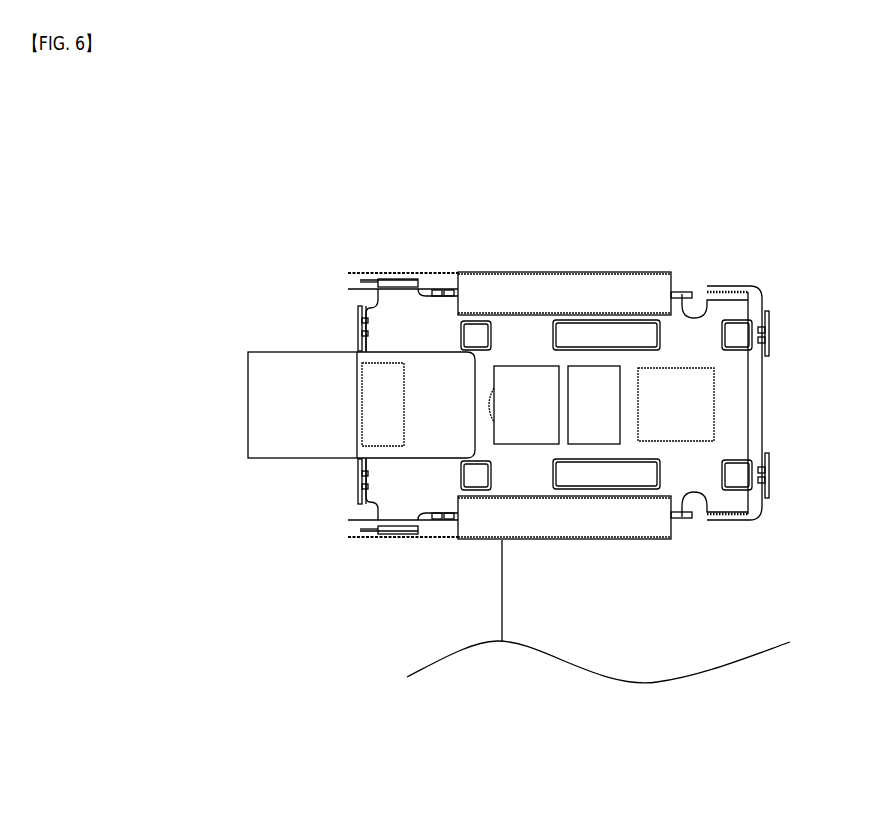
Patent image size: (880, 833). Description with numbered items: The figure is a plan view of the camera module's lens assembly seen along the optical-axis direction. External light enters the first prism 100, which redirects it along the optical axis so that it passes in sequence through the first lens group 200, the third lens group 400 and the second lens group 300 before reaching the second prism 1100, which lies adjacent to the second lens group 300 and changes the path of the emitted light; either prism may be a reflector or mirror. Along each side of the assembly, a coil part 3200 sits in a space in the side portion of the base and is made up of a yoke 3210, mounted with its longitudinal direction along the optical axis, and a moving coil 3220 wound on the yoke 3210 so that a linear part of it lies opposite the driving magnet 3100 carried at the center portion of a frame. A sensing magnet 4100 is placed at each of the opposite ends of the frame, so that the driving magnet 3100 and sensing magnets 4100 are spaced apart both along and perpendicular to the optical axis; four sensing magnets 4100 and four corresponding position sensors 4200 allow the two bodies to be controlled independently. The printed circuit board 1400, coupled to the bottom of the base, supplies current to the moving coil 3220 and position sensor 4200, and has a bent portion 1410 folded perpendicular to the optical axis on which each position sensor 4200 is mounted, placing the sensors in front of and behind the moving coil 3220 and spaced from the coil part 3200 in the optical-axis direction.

The first prism 100 is at (295, 426).
The first lens group 200 is at (387, 402).
The second lens group 300 is at (595, 385).
The third lens group 400 is at (522, 405).
The second prism 1100 is at (695, 428).
The printed circuit board 1400 is at (519, 623).
The bent portion 1410 is at (358, 318).
The driving magnet 3100 is at (572, 335).
The coil part 3200 is at (580, 477).
The yoke 3210 is at (681, 300).
The moving coil 3220 is at (628, 290).
The sensing magnet 4100 is at (478, 335).
The position sensor 4200 is at (362, 337).